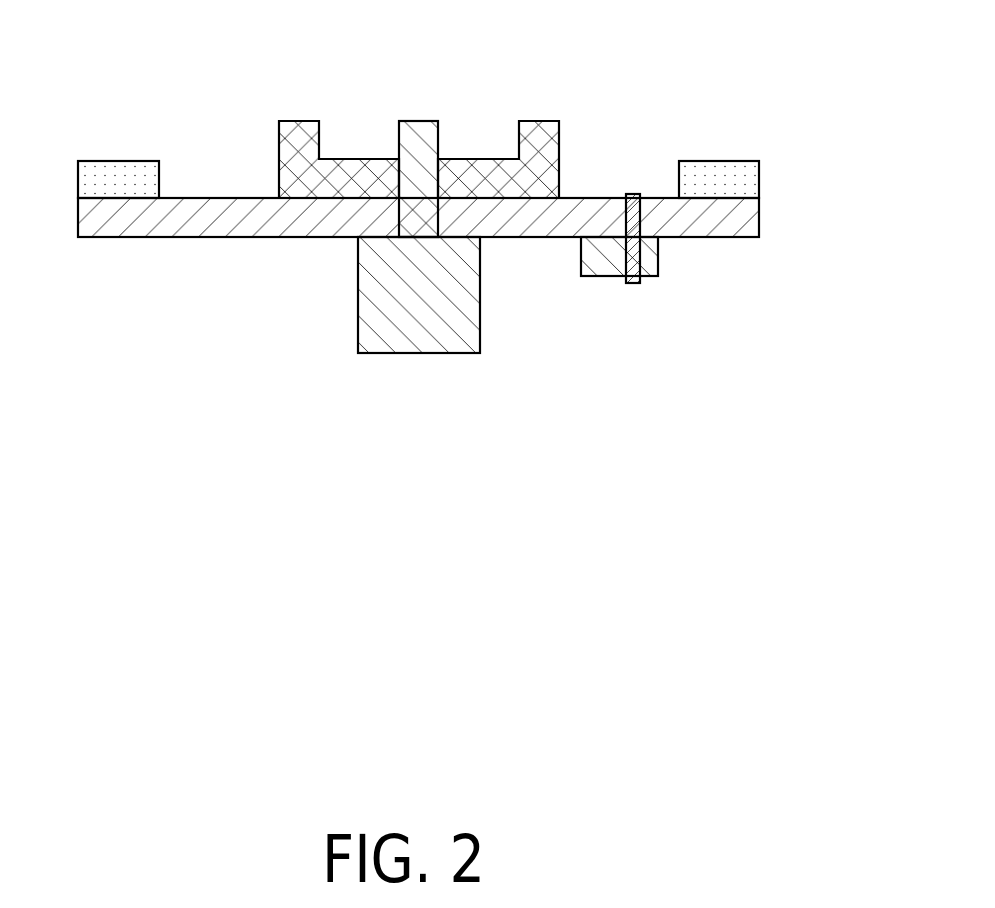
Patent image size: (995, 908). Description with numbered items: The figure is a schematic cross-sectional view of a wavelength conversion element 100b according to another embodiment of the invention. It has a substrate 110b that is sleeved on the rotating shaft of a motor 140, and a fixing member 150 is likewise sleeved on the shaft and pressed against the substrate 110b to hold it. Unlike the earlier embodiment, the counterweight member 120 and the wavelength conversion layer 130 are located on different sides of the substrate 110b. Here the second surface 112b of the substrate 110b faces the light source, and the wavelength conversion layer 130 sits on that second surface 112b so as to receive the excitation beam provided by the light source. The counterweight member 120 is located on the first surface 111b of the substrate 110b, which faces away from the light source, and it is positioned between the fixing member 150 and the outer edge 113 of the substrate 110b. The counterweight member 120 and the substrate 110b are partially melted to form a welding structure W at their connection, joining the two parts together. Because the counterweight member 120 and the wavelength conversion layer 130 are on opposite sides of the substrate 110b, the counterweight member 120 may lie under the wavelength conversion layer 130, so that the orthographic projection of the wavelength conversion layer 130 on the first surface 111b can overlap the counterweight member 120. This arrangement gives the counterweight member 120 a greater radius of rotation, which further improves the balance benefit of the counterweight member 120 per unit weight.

The wavelength conversion element 100b is at (85, 53).
The substrate 110b is at (218, 218).
The first surface 111b is at (732, 238).
The second surface 112b is at (732, 198).
The outer edge 113 is at (760, 220).
The counterweight member 120 is at (655, 262).
The wavelength conversion layer 130 is at (719, 172).
The motor 140 is at (463, 303).
The fixing member 150 is at (300, 130).
The welding structure W is at (637, 192).